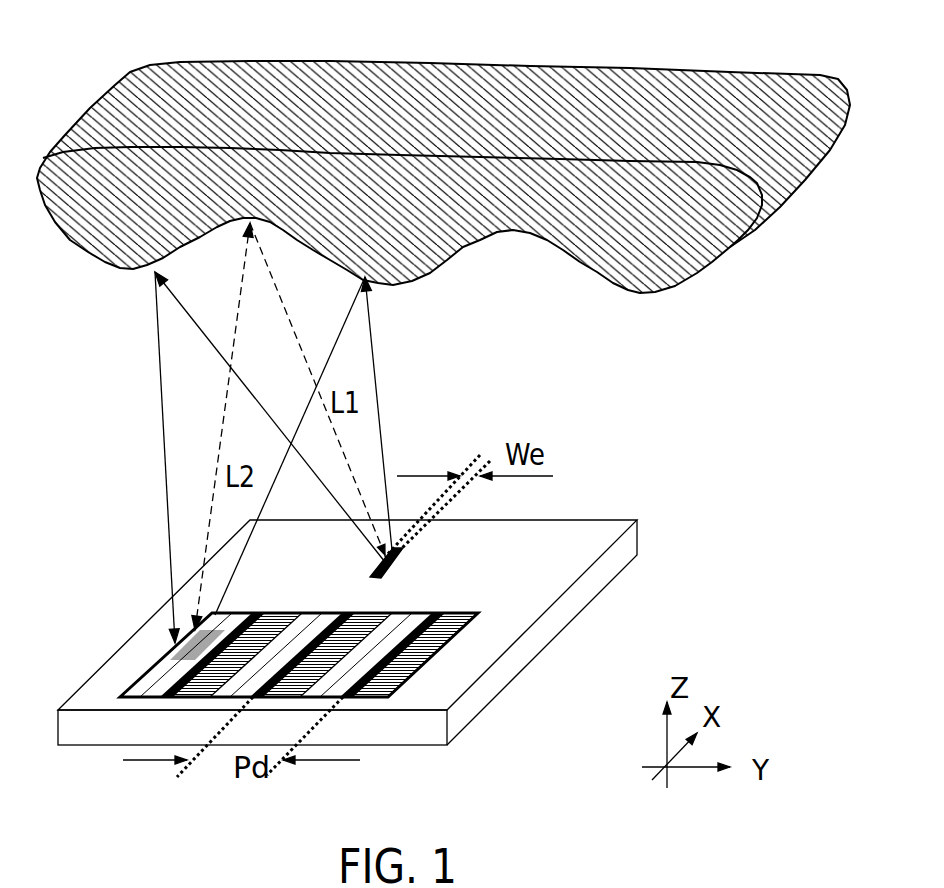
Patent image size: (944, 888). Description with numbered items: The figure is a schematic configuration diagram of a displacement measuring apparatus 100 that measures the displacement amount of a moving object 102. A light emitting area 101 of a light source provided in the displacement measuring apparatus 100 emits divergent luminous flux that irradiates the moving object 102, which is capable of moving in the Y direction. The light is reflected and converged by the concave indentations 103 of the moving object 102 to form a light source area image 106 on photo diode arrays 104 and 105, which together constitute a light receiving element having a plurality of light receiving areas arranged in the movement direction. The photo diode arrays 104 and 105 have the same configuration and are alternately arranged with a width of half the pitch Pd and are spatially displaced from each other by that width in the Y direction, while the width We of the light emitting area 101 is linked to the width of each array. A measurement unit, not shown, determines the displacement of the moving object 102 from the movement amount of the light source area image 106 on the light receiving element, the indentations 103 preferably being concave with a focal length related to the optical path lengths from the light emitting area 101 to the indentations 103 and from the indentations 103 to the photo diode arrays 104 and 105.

The displacement measuring apparatus 100 is at (650, 453).
The light emitting area 101 is at (383, 557).
The moving object 102 is at (673, 288).
The indentations 103 is at (270, 222).
The photo diode array 104 is at (345, 673).
The photo diode array 105 is at (447, 643).
The light source area image 106 is at (177, 648).